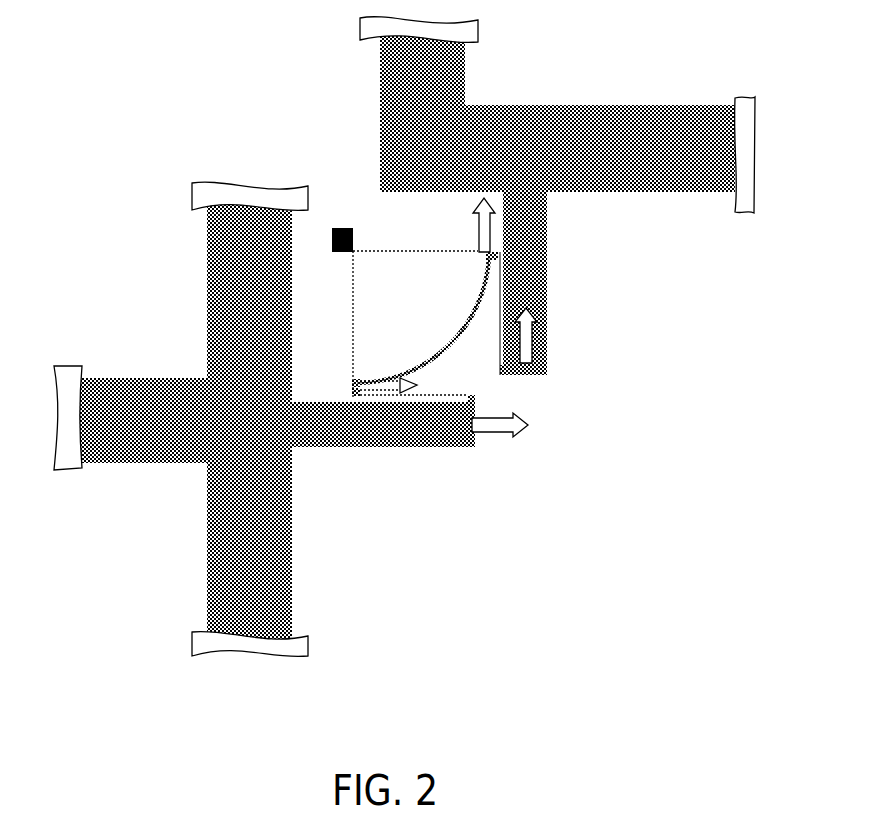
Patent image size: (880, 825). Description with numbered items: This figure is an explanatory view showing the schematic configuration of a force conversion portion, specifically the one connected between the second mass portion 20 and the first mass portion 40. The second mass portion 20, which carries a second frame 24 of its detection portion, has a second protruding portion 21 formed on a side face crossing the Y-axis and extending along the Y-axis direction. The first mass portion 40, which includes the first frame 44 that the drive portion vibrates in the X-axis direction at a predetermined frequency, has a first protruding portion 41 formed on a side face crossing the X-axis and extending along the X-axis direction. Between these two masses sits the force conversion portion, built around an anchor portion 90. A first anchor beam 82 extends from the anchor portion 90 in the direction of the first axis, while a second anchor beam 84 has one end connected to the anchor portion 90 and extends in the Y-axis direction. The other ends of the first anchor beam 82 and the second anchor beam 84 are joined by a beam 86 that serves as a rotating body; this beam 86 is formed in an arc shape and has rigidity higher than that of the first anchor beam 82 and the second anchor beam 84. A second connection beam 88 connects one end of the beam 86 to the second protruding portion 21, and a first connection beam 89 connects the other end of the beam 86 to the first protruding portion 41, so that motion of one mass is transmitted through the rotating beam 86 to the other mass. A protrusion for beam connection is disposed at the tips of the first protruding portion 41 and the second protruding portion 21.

The second mass portion 20 is at (557, 188).
The second protruding portion 21 is at (548, 268).
The second frame 24 is at (672, 193).
The first mass portion 40 is at (291, 419).
The first protruding portion 41 is at (441, 447).
The first frame 44 is at (206, 320).
The first anchor beam 82 is at (411, 249).
The second anchor beam 84 is at (352, 310).
The beam 86 is at (436, 346).
The second connection beam 88 is at (498, 302).
The first connection beam 89 is at (452, 394).
The anchor portion 90 is at (341, 228).